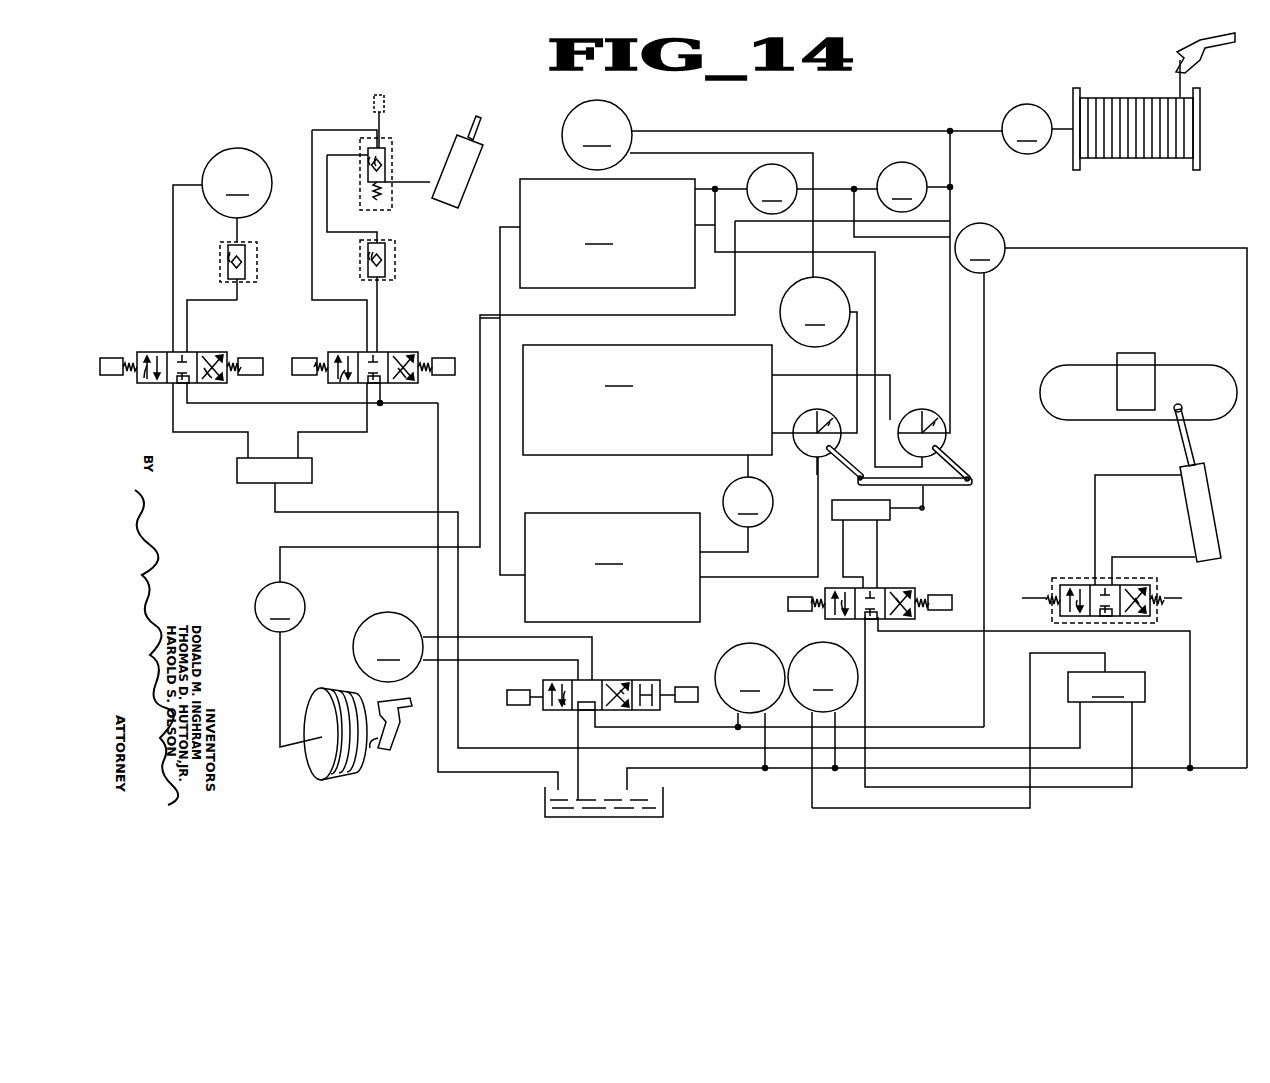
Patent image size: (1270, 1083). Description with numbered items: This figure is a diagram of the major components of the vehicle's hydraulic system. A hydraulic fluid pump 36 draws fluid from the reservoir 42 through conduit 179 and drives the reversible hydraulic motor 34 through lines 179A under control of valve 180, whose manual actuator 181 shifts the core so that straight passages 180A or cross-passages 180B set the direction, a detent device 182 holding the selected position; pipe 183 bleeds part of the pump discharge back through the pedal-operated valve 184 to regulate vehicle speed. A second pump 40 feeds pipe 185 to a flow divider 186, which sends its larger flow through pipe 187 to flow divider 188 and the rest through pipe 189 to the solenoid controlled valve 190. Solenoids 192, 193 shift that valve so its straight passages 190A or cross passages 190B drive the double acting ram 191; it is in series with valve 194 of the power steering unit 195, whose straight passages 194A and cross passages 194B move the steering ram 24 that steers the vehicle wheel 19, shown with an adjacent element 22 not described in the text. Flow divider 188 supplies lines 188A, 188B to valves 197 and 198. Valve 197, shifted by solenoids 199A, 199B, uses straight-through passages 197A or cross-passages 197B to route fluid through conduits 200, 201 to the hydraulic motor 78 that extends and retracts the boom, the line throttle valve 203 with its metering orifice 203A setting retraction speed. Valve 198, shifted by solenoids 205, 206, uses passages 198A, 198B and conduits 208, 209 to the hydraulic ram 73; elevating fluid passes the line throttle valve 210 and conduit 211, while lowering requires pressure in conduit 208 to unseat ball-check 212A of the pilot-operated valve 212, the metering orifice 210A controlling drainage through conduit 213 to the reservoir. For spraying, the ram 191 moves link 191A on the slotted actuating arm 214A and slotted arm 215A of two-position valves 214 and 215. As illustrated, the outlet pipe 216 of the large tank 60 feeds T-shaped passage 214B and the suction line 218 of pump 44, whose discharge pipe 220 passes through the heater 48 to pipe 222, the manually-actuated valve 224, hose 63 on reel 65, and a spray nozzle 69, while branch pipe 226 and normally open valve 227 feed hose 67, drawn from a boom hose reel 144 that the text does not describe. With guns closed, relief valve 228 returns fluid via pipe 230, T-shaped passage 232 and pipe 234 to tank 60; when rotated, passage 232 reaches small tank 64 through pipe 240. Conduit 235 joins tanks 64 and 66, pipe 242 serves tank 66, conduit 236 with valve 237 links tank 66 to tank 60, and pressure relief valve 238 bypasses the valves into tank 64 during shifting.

The hydraulic motor 78 is at (237, 148).
The conduit 200 is at (173, 200).
The line throttle valve 203 is at (215, 244).
The metering orifice 203A is at (228, 265).
The conduit 201 is at (187, 303).
The valve 197 is at (193, 352).
The straight-through passages 197A is at (148, 378).
The cross-passages 197B is at (206, 378).
The solenoid 199A is at (110, 358).
The solenoid 199B is at (250, 358).
The line 188A is at (180, 418).
The line 188B is at (364, 407).
The flow divider 188 is at (308, 470).
The pipe 187 is at (334, 510).
The conduit 213 is at (292, 398).
The conduit 208 is at (348, 128).
The pilot-operated valve 212 is at (383, 142).
The ball-check 212A is at (390, 152).
The conduit 211 is at (412, 182).
The hydraulic ram 73 is at (457, 122).
The line throttle valve 210 is at (402, 246).
The metering orifice 210A is at (368, 262).
The conduit 209 is at (378, 288).
The valve 198 is at (377, 346).
The straight-through passages 198A is at (345, 384).
The cross-passages 198B is at (397, 380).
The solenoid 205 is at (301, 356).
The solenoid 206 is at (443, 356).
The branch pipe 226 is at (286, 571).
The normally open valve 227 is at (303, 601).
The hydraulic motor 34 is at (395, 611).
The reel 144 is at (320, 776).
The hose 67 is at (368, 768).
The spray nozzle 69 is at (407, 745).
The heater 48 is at (597, 135).
The pipe 222 is at (732, 130).
The discharge pipe 220 is at (678, 154).
The pressure relief valve 238 is at (747, 171).
The relief valve 228 is at (876, 162).
The manually-actuated valve 224 is at (1020, 104).
The reel 65 is at (1080, 88).
The hose 63 is at (1140, 104).
The pipe 230 is at (850, 202).
The pipe 240 is at (702, 232).
The small tank 64 is at (607, 233).
The large tank 60 is at (647, 400).
The small tank 66 is at (612, 567).
The conduit 235 is at (509, 488).
The pump 44 is at (787, 280).
The suction line 218 is at (850, 349).
The pipe 234 is at (770, 371).
The two-position valve 214 is at (796, 412).
The slotted actuating arm 214A is at (840, 464).
The T-shaped passage 214B is at (838, 396).
The outlet pipe 216 is at (772, 420).
The two-position valve 215 is at (900, 402).
The slotted arm 215A is at (961, 458).
The T-shaped passage 232 is at (940, 398).
The conduit 236 is at (743, 460).
The valve 237 is at (723, 491).
The pipe 242 is at (756, 574).
The double acting ram 191 is at (888, 516).
The link 191A is at (930, 486).
The solenoid controlled valve 190 is at (875, 586).
The straight passages 190A is at (840, 613).
The cross passages 190B is at (900, 596).
The solenoid 192 is at (788, 603).
The solenoid 193 is at (940, 596).
The pedal-operated valve 184 is at (993, 224).
The pipe 183 is at (986, 308).
The vehicle wheel 19 is at (1058, 365).
The support 22 is at (1140, 350).
The steering ram 24 is at (1190, 494).
The power steering unit 195 is at (1050, 577).
The valve 194 is at (1072, 585).
The straight passages 194A is at (1075, 610).
The cross passages 194B is at (1132, 588).
The valve 180 is at (598, 680).
The straight passages 180A is at (545, 712).
The cross-passages 180B is at (624, 684).
The manual actuator 181 is at (515, 690).
The detent device 182 is at (685, 686).
The conduit 179 is at (768, 770).
The lines 179A is at (662, 727).
The hydraulic fluid pump 36 is at (736, 644).
The hydraulic fluid pump 40 is at (798, 644).
The pipe 189 is at (869, 648).
The pipe 185 is at (1076, 656).
The flow divider 186 is at (1106, 687).
The reservoir 42 is at (664, 785).